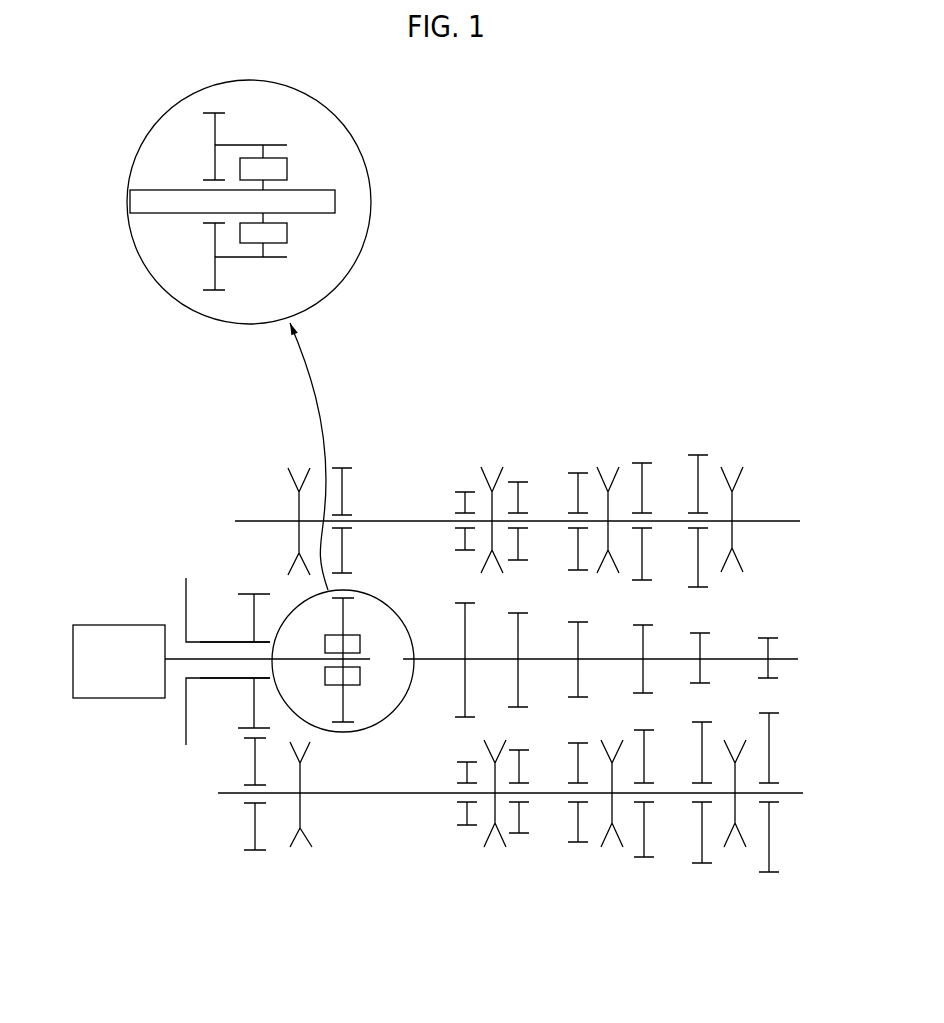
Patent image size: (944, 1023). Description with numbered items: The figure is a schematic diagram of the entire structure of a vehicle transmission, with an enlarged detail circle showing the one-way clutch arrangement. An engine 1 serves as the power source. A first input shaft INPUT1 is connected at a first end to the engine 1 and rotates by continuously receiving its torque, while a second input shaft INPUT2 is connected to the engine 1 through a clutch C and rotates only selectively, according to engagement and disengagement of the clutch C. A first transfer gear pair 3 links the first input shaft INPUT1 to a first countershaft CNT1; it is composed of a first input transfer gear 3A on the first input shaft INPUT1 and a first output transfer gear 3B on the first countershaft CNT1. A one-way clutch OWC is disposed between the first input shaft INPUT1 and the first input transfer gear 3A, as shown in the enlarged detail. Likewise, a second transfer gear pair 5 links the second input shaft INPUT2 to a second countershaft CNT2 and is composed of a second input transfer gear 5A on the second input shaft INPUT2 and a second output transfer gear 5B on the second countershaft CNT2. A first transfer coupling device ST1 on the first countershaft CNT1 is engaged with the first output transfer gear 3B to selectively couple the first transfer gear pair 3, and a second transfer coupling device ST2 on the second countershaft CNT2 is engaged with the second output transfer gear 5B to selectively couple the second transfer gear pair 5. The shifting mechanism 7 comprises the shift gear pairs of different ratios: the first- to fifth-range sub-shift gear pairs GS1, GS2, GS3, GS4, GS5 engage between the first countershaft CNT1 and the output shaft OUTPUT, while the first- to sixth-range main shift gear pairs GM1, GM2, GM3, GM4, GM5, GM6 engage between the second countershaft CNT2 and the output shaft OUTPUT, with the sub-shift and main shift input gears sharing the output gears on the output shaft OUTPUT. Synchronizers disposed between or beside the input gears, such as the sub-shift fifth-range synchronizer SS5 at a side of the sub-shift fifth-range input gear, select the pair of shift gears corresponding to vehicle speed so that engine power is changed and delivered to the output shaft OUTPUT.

The engine 1 is at (102, 698).
The first transfer gear pair 3 is at (465, 437).
The first input transfer gear 3A is at (215, 128).
The first output transfer gear 3B is at (343, 560).
The second transfer gear pair 5 is at (190, 755).
The second input transfer gear 5A is at (252, 712).
The second output transfer gear 5B is at (253, 830).
The shifting mechanism 7 is at (449, 375).
The clutch C is at (186, 723).
The one-way clutch OWC is at (287, 170).
The first input shaft INPUT1 is at (180, 203).
The second input shaft INPUT2 is at (233, 642).
The output shaft OUTPUT is at (787, 658).
The first countershaft CNT1 is at (768, 518).
The second countershaft CNT2 is at (790, 791).
The first transfer coupling device ST1 is at (296, 492).
The second transfer coupling device ST2 is at (303, 848).
The sub-shift 5-range synchronizer SS5 is at (740, 477).
The 1-range sub-shift gear pair GS1 is at (460, 511).
The 2-range sub-shift gear pair GS2 is at (521, 510).
The 3-range sub-shift gear pair GS3 is at (575, 512).
The 4-range sub-shift gear pair GS4 is at (639, 512).
The 5-range sub-shift gear pair GS5 is at (695, 511).
The 1-range main shift gear pair GM1 is at (469, 806).
The 2-range main shift gear pair GM2 is at (527, 803).
The 3-range main shift gear pair GM3 is at (581, 805).
The 4-range main shift gear pair GM4 is at (648, 805).
The 5-range main shift gear pair GM5 is at (702, 804).
The 6-range main shift gear pair GM6 is at (771, 804).